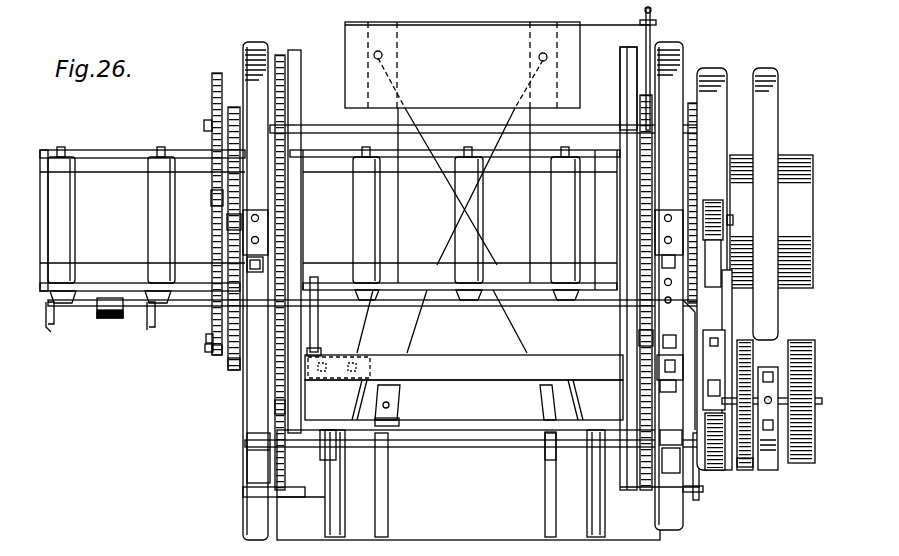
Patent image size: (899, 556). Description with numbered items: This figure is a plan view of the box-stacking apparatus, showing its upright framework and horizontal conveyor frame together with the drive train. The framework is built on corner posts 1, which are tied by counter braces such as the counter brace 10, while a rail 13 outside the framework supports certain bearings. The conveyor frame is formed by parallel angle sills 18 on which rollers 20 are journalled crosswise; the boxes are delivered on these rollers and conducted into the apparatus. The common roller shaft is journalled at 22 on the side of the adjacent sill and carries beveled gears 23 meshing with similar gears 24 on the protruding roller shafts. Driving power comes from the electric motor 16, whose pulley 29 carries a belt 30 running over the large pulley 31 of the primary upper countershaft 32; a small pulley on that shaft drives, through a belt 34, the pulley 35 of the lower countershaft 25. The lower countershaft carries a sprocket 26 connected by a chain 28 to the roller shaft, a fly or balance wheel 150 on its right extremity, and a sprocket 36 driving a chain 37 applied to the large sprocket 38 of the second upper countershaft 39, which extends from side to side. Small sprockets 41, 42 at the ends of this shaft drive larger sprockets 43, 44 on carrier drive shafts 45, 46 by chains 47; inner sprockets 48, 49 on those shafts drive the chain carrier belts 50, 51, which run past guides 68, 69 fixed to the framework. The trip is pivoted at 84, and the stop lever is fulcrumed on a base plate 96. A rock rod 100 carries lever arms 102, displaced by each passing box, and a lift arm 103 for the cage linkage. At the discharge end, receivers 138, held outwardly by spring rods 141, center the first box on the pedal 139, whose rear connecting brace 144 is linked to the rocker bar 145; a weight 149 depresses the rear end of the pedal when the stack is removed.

The corner posts 1 is at (258, 462).
The counter brace 10 is at (497, 377).
The rail 13 is at (778, 80).
The electric motor 16 is at (796, 172).
The angle sills 18 is at (118, 147).
The rollers 20 is at (148, 218).
The journal 22 is at (113, 318).
The beveled gears 23 is at (50, 330).
The beveled gears 24 is at (74, 305).
The lower countershaft 25 is at (205, 348).
The sprocket 26 is at (233, 370).
The chain 28 is at (212, 322).
The pulley 29 is at (714, 200).
The belt 30 is at (735, 318).
The large pulley 31 is at (745, 338).
The primary upper countershaft 32 is at (678, 372).
The belt 34 is at (748, 472).
The pulley 35 is at (753, 360).
The sprocket 36 is at (215, 352).
The chain 37 is at (212, 198).
The large sprocket 38 is at (211, 85).
The second upper countershaft 39 is at (458, 125).
The small sprocket 41 is at (700, 110).
The small sprocket 42 is at (228, 118).
The larger sprocket 43 is at (710, 305).
The larger sprocket 44 is at (228, 222).
The carrier drive shaft 45 is at (655, 252).
The carrier drive shaft 46 is at (270, 248).
The chains 47 is at (240, 152).
The sprocket 48 is at (660, 280).
The sprocket 49 is at (270, 268).
The chain carrier belt 50 is at (640, 340).
The chain carrier belt 51 is at (275, 406).
The guide 68 is at (300, 85).
The guide 69 is at (623, 368).
The pivot 84 is at (320, 352).
The base plate 96 is at (370, 336).
The rock rod 100 is at (466, 447).
The lever arms 102 is at (388, 510).
The lift arm 103 is at (700, 483).
The receivers 138 is at (328, 508).
The pedal 139 is at (400, 400).
The spring rods 141 is at (355, 398).
The rear connecting brace 144 is at (596, 28).
The rocker bar 145 is at (650, 45).
The weight 149 is at (345, 35).
The fly wheel 150 is at (805, 463).